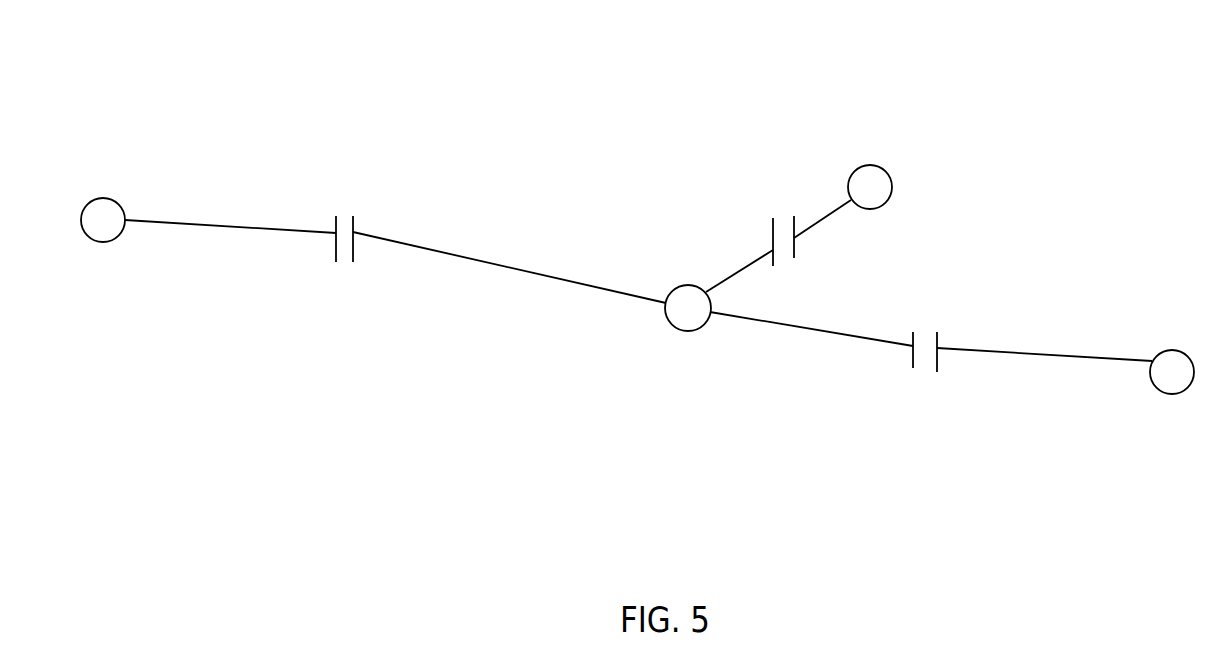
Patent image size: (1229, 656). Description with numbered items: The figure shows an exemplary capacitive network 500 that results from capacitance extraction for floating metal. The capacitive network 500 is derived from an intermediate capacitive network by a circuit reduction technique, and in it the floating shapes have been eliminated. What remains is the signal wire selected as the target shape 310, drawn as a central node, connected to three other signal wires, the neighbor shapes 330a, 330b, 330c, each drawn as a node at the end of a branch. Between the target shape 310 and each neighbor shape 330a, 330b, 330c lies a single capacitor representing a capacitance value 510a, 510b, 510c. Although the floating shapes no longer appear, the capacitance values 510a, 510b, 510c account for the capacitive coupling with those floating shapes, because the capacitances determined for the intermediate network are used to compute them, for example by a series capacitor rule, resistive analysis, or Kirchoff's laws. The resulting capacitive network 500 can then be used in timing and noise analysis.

The capacitive network 500 is at (202, 101).
The target shape 310 is at (660, 327).
The neighbor shape 330a is at (88, 239).
The neighbor shape 330b is at (906, 163).
The neighbor shape 330c is at (1184, 349).
The capacitance value 510a is at (395, 239).
The capacitance value 510b is at (778, 237).
The capacitance value 510c is at (931, 363).